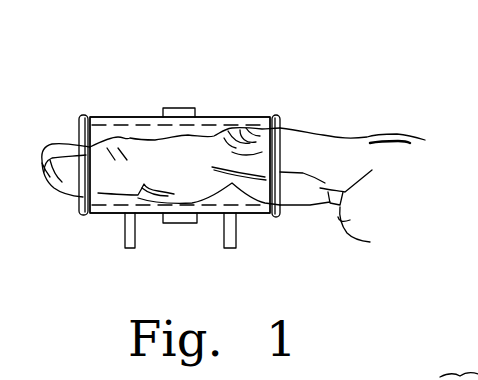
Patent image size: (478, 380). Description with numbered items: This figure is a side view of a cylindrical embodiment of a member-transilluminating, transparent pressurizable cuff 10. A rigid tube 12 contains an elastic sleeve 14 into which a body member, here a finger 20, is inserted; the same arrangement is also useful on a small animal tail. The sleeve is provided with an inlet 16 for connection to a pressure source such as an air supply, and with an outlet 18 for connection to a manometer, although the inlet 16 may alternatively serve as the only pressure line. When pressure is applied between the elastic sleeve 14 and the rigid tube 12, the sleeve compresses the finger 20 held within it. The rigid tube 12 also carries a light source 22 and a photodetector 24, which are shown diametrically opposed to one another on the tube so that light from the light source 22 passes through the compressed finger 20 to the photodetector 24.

The transparent pressurizable cuff 10 is at (303, 80).
The rigid tube 12 is at (110, 117).
The elastic sleeve 14 is at (223, 120).
The inlet 16 is at (125, 238).
The outlet 18 is at (236, 233).
The finger 20 is at (66, 195).
The light source 22 is at (163, 108).
The photodetector 24 is at (190, 225).